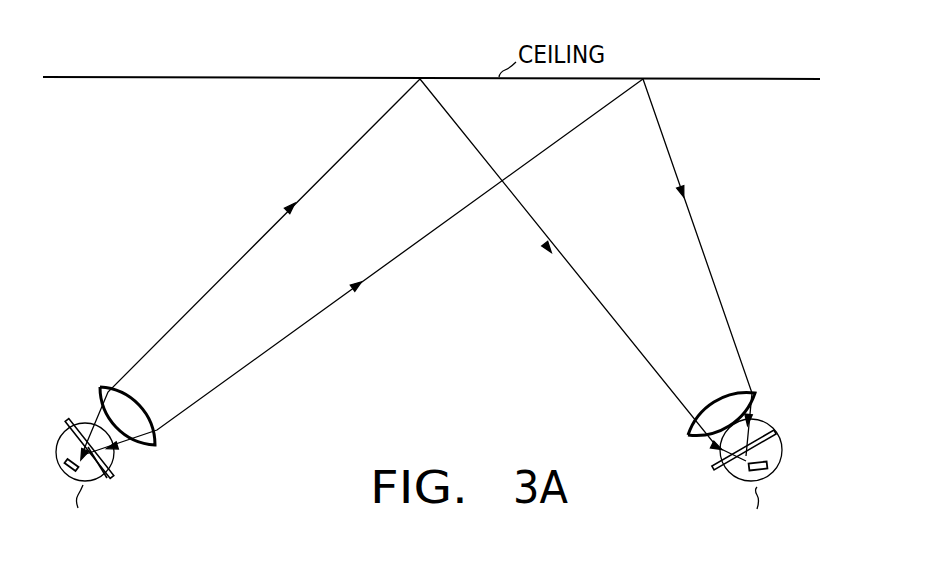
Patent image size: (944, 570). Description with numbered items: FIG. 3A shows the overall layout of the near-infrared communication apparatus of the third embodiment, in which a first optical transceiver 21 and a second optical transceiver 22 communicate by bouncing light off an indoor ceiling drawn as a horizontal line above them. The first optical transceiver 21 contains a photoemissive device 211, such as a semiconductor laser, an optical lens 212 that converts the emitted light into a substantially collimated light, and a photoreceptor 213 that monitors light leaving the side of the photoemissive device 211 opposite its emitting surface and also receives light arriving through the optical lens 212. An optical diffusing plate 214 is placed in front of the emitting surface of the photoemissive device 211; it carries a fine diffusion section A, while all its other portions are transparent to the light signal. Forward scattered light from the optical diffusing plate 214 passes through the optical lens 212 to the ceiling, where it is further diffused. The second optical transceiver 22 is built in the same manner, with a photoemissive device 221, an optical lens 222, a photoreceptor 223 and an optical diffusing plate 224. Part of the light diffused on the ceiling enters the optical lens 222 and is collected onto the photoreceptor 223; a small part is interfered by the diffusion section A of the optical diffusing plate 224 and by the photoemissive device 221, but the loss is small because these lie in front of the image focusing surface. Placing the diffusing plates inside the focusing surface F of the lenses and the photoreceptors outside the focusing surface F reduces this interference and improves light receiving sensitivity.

The first optical transceiver 21 is at (98, 352).
The photoemissive device 211 is at (101, 477).
The optical lens 212 is at (155, 445).
The photoreceptor 213 is at (65, 472).
The optical diffusing plate 214 is at (70, 421).
The second optical transceiver 22 is at (838, 447).
The photoemissive device 221 is at (731, 476).
The optical lens 222 is at (753, 391).
The photoreceptor 223 is at (773, 471).
The optical diffusing plate 224 is at (771, 432).
The diffusion section A is at (113, 472).
The focusing surface F is at (64, 441).